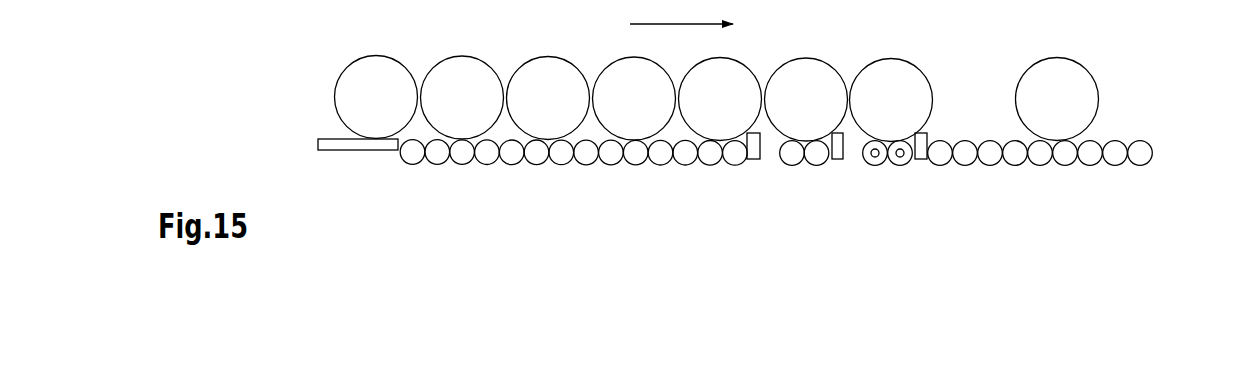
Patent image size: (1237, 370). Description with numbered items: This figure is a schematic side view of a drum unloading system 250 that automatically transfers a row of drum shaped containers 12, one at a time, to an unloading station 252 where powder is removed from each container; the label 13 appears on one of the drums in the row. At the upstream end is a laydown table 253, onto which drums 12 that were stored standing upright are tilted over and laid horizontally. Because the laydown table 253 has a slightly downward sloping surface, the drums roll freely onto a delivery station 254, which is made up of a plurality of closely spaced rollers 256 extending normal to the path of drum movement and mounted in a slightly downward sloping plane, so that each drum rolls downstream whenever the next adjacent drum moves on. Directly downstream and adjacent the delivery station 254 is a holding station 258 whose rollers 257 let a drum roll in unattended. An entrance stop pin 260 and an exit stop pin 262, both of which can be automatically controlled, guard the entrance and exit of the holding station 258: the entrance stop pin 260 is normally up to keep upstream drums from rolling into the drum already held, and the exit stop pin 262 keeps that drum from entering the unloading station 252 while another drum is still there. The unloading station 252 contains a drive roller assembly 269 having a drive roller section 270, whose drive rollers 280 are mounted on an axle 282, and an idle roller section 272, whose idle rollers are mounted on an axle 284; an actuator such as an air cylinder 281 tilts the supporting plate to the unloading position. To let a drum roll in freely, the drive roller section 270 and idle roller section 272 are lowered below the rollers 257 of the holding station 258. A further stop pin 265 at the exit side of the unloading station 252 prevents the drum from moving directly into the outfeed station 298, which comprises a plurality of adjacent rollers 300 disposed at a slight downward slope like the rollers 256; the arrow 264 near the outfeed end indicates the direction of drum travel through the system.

The drum shaped container 12 is at (376, 55).
The roller 13 is at (546, 56).
The drum unloading system 250 is at (1122, 103).
The unloading station 252 is at (959, 70).
The laydown table 253 is at (358, 151).
The delivery station 254 is at (573, 183).
The rollers 256 is at (487, 165).
The rollers 257 is at (790, 165).
The holding station 258 is at (791, 199).
The entrance stop pin 260 is at (753, 160).
The exit stop pin 262 is at (860, 134).
The roller chain 264 is at (1079, 193).
The stop pin 265 is at (920, 160).
The drive roller assembly 269 is at (930, 157).
The drive roller section 270 is at (874, 172).
The idle roller section 272 is at (903, 172).
The drive rollers 280 is at (846, 156).
The air cylinder 281 is at (955, 146).
The axle 282 is at (877, 150).
The axle 284 is at (899, 152).
The outfeed station 298 is at (1103, 176).
The rollers 300 is at (1143, 148).